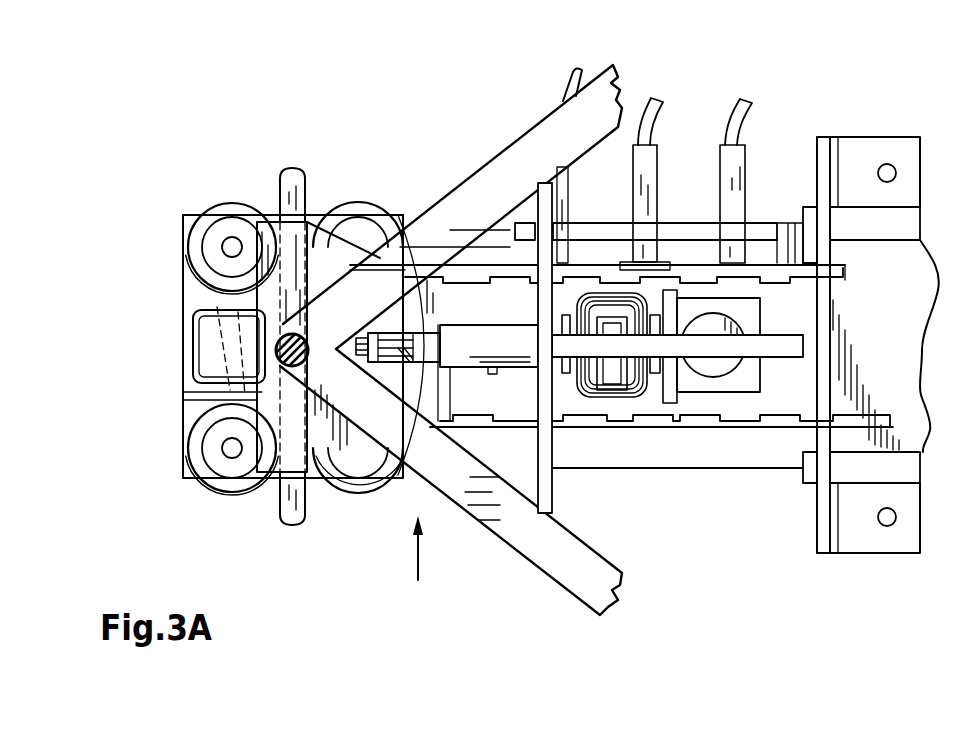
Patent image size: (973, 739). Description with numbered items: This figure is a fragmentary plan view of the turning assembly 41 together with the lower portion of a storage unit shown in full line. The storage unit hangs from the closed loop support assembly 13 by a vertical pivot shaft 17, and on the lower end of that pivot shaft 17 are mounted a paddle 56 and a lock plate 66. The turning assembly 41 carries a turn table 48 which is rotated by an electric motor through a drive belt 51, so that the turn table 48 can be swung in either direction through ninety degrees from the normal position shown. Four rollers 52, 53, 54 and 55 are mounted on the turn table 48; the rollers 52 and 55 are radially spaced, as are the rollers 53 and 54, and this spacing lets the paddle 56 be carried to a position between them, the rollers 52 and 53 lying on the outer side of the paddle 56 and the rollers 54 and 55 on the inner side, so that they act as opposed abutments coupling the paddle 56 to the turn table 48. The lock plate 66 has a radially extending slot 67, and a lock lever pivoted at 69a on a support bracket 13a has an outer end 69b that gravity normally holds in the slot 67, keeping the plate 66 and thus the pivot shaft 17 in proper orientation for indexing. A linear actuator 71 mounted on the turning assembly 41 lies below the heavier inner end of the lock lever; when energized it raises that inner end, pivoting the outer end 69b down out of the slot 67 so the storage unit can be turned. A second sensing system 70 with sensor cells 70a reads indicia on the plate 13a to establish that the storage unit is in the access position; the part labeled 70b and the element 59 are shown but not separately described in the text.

The support assembly 13 is at (612, 108).
The support bracket 13a is at (548, 483).
The pivot shaft 17 is at (280, 338).
The turning assembly 41 is at (420, 565).
The turn table 48 is at (187, 411).
The drive belt 51 is at (708, 427).
The roller 52 is at (225, 212).
The roller 53 is at (225, 497).
The roller 54 is at (353, 488).
The roller 55 is at (350, 207).
The paddle 56 is at (293, 187).
The pin 59 is at (298, 527).
The lock plate 66 is at (340, 405).
The slot 67 is at (420, 362).
The pivot 69a is at (490, 325).
The outer end 69b is at (400, 318).
The second sensing system 70 is at (820, 153).
The sensor cells 70a is at (807, 210).
The bracket lower block 70b is at (810, 473).
The linear actuator 71 is at (658, 403).